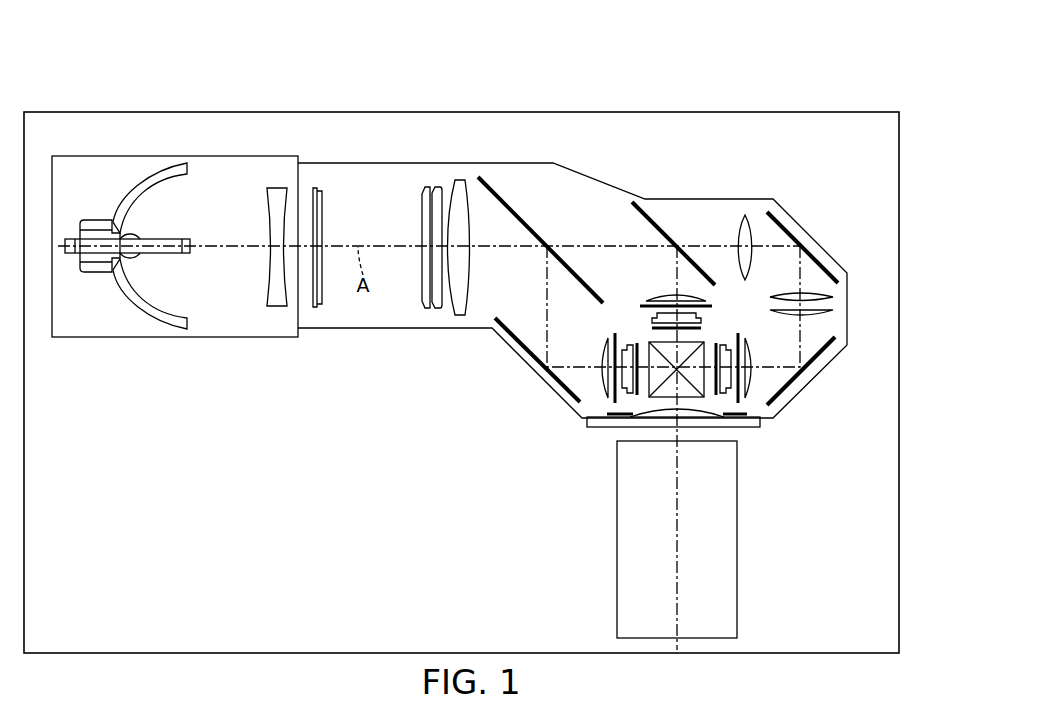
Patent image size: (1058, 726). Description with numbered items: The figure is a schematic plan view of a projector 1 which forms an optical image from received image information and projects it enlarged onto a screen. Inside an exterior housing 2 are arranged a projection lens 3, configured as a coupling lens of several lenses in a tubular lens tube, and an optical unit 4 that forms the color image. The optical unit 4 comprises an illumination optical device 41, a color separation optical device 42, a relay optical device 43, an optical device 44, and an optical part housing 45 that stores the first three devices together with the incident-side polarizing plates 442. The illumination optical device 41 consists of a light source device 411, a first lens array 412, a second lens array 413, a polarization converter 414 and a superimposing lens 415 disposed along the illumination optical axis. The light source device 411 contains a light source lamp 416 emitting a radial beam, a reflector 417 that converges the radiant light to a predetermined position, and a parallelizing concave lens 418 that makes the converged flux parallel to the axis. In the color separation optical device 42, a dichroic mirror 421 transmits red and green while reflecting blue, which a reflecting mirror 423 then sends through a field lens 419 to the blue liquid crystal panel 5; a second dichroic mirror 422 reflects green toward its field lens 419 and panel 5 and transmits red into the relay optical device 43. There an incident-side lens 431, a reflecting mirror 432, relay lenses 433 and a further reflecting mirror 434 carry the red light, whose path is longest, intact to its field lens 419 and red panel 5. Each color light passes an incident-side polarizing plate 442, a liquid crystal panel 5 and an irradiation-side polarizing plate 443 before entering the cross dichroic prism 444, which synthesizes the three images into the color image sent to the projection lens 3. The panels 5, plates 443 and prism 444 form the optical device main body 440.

The projector 1 is at (727, 86).
The exterior housing 2 is at (899, 197).
The projection lens 3 is at (737, 550).
The optical unit 4 is at (428, 362).
The illumination optical device 41 is at (430, 135).
The color separation optical device 42 is at (592, 185).
The relay optical device 43 is at (808, 216).
The optical device 44 is at (749, 310).
The optical part housing 45 is at (689, 199).
The light source device 411 is at (123, 63).
The first lens array 412 is at (318, 215).
The second lens array 413 is at (424, 190).
The polarization converter 414 is at (436, 190).
The superimposing lens 415 is at (464, 205).
The light source lamp 416 is at (170, 240).
The reflector 417 is at (165, 165).
The parallelizing concave lens 418 is at (277, 188).
The field lens 419 is at (668, 293).
The dichroic mirror 421 is at (507, 200).
The dichroic mirror 422 is at (660, 222).
The reflecting mirror 423 is at (513, 328).
The incident-side lens 431 is at (745, 215).
The reflecting mirror 432 is at (822, 262).
The relay lens 433 is at (835, 310).
The reflecting mirror 434 is at (815, 362).
The optical device main body 440 is at (720, 308).
The incident-side polarizing plate 442 is at (641, 305).
The irradiation-side polarizing plate 443 is at (700, 328).
The cross dichroic prism 444 is at (665, 393).
The liquid crystal panel 5 is at (652, 320).